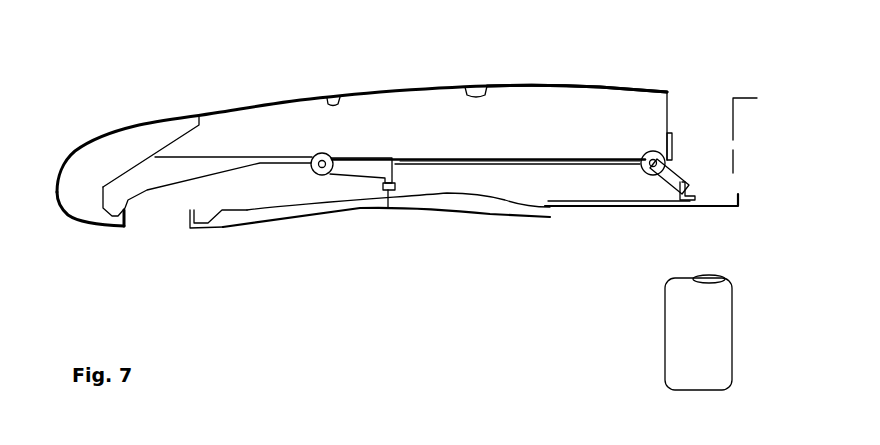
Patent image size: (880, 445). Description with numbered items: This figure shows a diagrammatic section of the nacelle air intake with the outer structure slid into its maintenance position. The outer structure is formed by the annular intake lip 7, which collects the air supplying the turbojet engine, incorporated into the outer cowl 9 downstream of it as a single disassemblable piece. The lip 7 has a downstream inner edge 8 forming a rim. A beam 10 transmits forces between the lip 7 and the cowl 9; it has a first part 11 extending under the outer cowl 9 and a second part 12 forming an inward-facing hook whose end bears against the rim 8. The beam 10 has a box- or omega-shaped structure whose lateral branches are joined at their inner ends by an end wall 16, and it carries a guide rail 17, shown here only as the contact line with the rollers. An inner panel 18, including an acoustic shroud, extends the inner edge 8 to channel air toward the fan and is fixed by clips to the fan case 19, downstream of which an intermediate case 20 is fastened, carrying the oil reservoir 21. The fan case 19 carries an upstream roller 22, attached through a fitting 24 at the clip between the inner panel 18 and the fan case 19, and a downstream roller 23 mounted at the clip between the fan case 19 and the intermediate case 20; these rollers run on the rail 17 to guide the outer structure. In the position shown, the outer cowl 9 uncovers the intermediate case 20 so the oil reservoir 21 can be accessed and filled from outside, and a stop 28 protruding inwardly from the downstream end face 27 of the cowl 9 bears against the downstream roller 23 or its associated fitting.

The annular intake lip 7 is at (56, 195).
The downstream inner edge 8 is at (125, 225).
The outer cowl 9 is at (380, 92).
The beam 10 is at (577, 68).
The first part 11 is at (540, 102).
The second part 12 is at (160, 172).
The end wall 16 is at (537, 165).
The guide rail 17 is at (257, 157).
The inner panel 18 is at (242, 212).
The fan case 19 is at (445, 197).
The intermediate case 20 is at (708, 207).
The oil reservoir 21 is at (711, 342).
The upstream roller 22 is at (317, 150).
The downstream roller 23 is at (650, 152).
The fitting 24 is at (367, 168).
The downstream end face 27 is at (667, 117).
The stop 28 is at (672, 147).